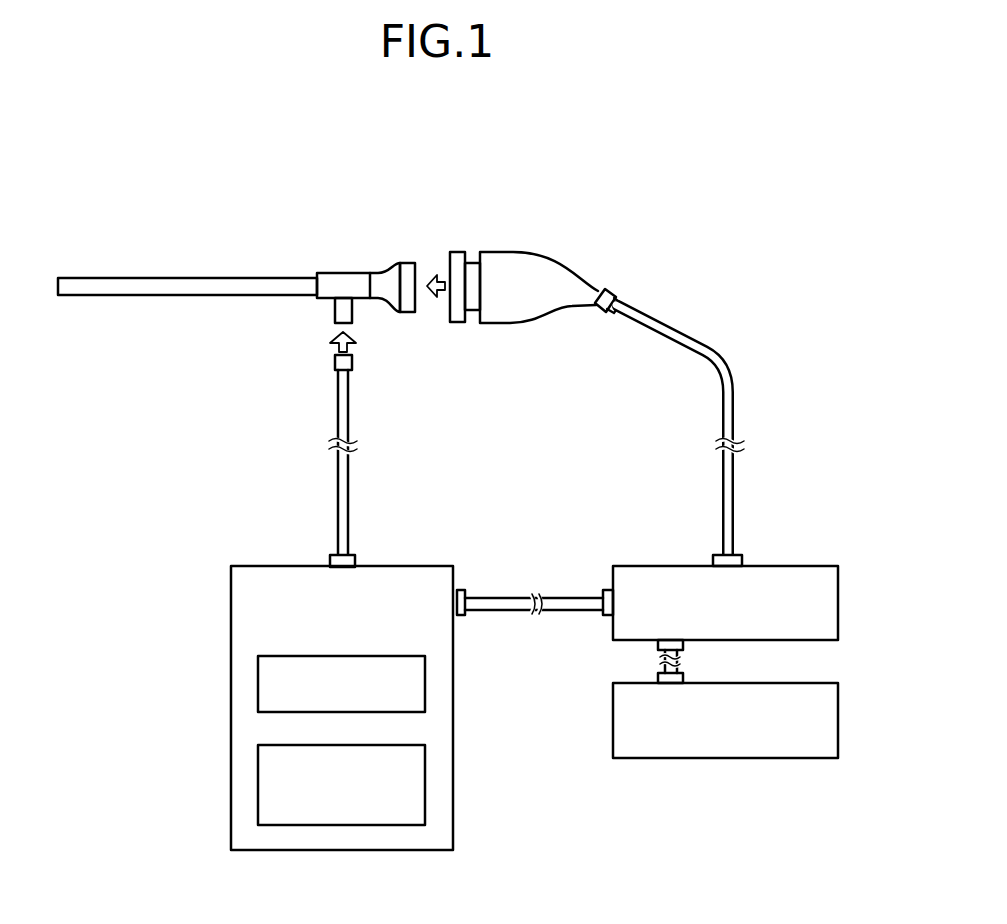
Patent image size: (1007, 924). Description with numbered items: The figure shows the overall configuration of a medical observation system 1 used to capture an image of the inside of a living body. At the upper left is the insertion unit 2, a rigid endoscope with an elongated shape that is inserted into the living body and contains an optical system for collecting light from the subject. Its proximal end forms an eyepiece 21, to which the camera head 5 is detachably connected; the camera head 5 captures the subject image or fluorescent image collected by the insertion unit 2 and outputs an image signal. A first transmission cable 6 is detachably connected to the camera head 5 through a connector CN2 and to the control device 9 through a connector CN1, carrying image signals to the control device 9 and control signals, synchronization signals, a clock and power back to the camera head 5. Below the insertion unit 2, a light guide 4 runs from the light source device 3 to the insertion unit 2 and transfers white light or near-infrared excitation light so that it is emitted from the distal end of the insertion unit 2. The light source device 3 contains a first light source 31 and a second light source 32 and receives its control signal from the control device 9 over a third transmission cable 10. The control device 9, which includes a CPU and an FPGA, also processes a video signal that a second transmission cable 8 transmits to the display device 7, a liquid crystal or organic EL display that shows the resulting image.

The medical observation system 1 is at (684, 195).
The insertion unit 2 is at (265, 287).
The eyepiece 21 is at (408, 272).
The camera head 5 is at (502, 270).
The connector CN2 is at (612, 310).
The first transmission cable 6 is at (733, 407).
The connector CN1 is at (737, 553).
The control device 9 is at (790, 543).
The third transmission cable 10 is at (575, 597).
The light guide 4 is at (338, 505).
The light source device 3 is at (398, 567).
The first light source 31 is at (373, 656).
The second light source 32 is at (373, 745).
The second transmission cable 8 is at (660, 670).
The display device 7 is at (790, 661).